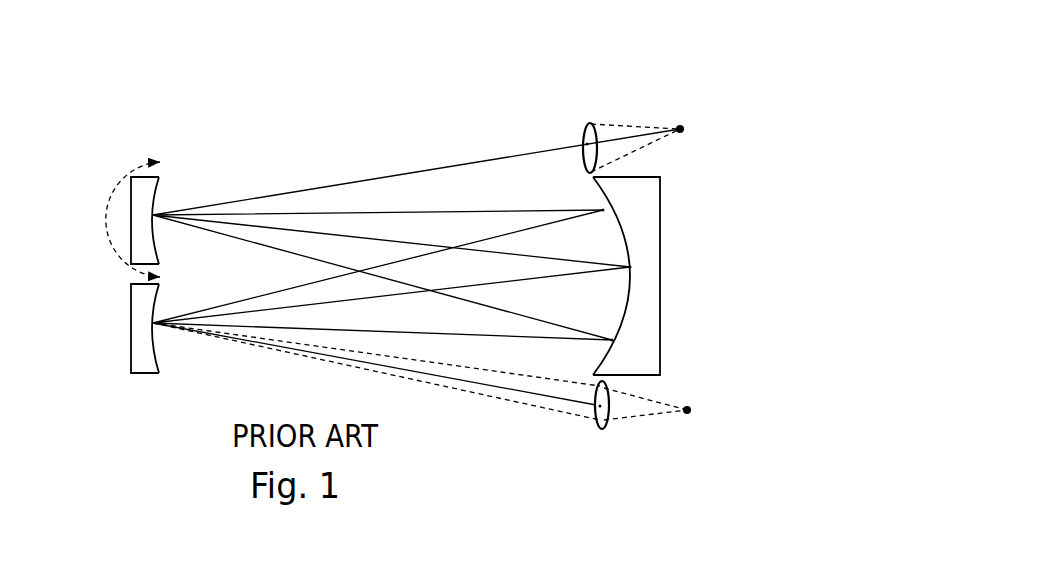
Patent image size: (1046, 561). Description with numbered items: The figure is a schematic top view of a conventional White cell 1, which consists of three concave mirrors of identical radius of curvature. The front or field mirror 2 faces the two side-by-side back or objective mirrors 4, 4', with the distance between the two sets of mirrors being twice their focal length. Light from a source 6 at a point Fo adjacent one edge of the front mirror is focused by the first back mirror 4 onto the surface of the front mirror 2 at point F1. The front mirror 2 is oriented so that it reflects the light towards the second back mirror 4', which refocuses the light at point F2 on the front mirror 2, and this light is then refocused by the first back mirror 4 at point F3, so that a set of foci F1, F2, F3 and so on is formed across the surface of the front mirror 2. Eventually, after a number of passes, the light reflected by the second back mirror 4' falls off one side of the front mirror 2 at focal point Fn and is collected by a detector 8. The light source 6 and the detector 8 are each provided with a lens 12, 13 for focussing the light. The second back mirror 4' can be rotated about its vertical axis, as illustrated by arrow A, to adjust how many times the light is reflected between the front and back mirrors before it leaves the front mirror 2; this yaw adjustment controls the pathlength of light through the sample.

The White cell 1 is at (397, 137).
The front mirror 2 is at (642, 259).
The first back mirror 4 is at (97, 328).
The second back mirror 4' is at (93, 220).
The light source 6 is at (687, 413).
The detector 8 is at (681, 126).
The lens 12 is at (602, 430).
The lens 13 is at (591, 123).
The arrow A is at (117, 183).
The point F1 is at (603, 210).
The point F2 is at (630, 267).
The point F3 is at (612, 340).
The focal point Fn is at (586, 142).
The point Fo is at (602, 405).